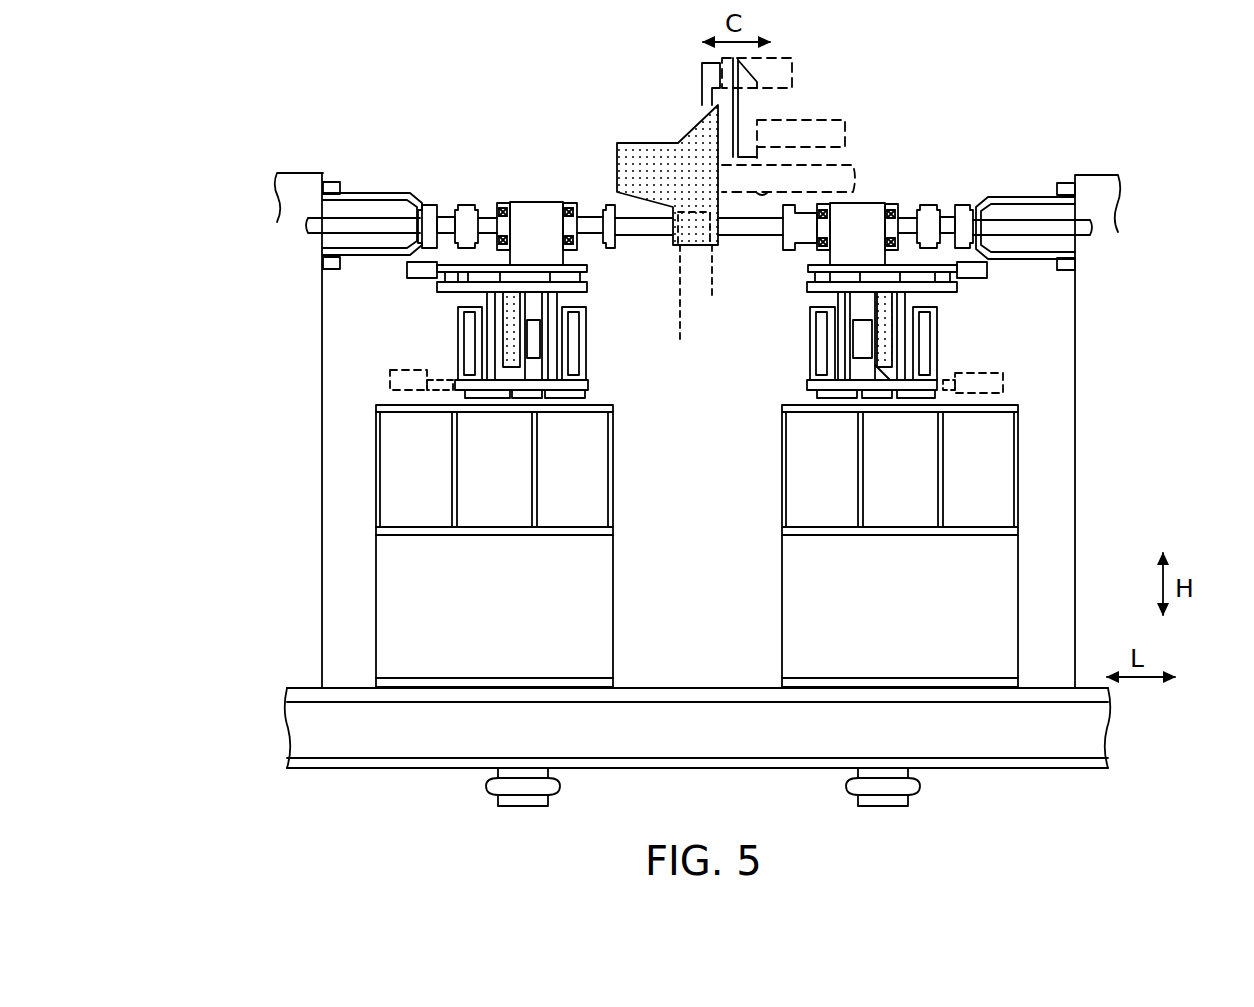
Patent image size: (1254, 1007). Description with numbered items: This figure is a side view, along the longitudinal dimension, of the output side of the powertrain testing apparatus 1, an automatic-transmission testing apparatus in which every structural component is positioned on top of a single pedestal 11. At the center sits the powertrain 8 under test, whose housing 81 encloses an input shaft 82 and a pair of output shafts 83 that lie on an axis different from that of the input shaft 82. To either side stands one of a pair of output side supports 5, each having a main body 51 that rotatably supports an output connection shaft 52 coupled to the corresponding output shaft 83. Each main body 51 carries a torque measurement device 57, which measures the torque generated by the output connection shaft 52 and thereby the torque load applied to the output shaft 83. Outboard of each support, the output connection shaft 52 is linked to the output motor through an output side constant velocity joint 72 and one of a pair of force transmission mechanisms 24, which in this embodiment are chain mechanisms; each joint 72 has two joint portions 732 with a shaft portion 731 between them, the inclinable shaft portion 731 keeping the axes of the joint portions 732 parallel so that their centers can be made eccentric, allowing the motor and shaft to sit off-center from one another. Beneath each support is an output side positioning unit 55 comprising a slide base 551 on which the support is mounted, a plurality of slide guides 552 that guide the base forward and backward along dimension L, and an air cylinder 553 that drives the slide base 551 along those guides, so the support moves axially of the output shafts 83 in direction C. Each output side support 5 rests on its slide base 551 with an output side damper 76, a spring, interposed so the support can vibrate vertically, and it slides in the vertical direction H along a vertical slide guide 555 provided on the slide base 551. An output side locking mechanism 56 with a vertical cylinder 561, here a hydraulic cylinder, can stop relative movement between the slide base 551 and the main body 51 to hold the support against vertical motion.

The powertrain testing apparatus 1 is at (290, 148).
The output side support 5 is at (580, 193).
The powertrain 8 is at (632, 130).
The pedestal 11 is at (340, 738).
The force transmission mechanism 24 is at (290, 313).
The main body 51 is at (533, 220).
The output connection shaft 52 is at (650, 235).
The output side positioning unit 55 is at (505, 413).
The output side locking mechanism 56 is at (877, 368).
The torque measurement device 57 is at (548, 197).
The output side constant velocity joint 72 is at (458, 195).
The output side damper 76 is at (883, 314).
The housing 81 is at (692, 150).
The input shaft 82 is at (717, 175).
The output shaft 83 is at (696, 294).
The slide base 551 is at (400, 380).
The slide guide 552 is at (483, 395).
The air cylinder 553 is at (400, 383).
The vertical slide guide 555 is at (480, 332).
The vertical cylinder 561 is at (860, 342).
The shaft portion 731 is at (952, 207).
The joint portion 732 is at (930, 205).